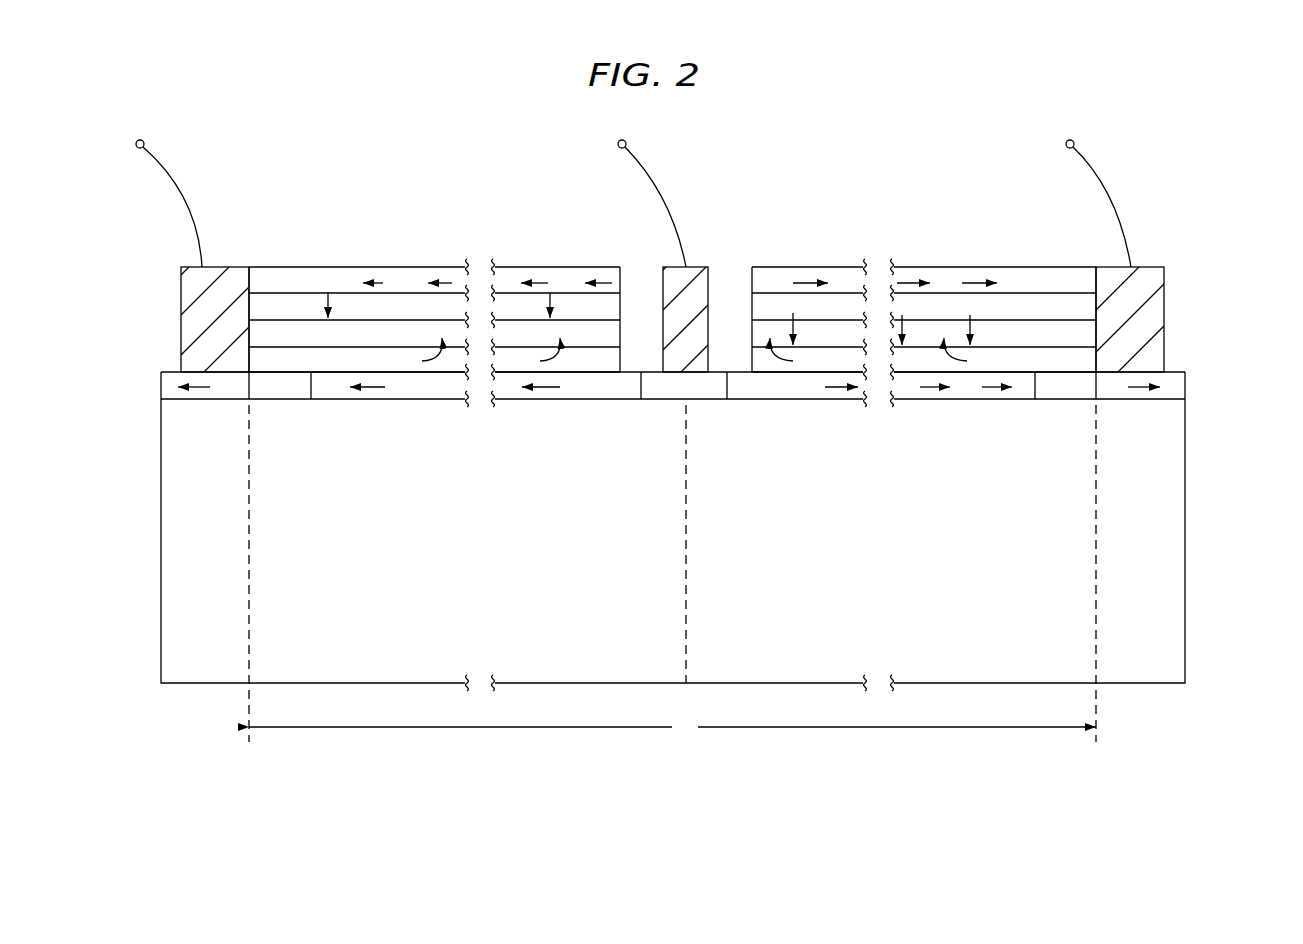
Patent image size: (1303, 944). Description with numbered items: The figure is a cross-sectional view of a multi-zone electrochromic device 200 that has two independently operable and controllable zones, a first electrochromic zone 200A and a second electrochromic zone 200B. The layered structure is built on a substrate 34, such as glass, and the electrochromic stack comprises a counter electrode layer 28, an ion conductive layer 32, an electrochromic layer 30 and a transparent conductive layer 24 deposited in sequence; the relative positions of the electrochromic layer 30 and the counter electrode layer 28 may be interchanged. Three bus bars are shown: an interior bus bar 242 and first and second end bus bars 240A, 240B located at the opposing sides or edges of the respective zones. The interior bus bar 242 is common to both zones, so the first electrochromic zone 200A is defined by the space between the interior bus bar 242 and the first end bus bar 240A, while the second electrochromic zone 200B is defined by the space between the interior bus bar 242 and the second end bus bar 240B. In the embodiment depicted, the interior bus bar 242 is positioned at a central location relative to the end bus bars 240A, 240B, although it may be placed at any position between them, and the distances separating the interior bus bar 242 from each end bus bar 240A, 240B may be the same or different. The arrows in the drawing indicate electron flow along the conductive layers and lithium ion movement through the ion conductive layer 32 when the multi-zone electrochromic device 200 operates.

The transparent conductive layer 24 is at (260, 275).
The counter electrode layer 28 is at (307, 360).
The electrochromic layer 30 is at (277, 303).
The ion conductive layer 32 is at (287, 330).
The substrate 34 is at (183, 567).
The multi-zone electrochromic device 200 is at (1056, 792).
The first electrochromic zone 200A is at (415, 540).
The second electrochromic zone 200B is at (907, 540).
The first end bus bar 240A is at (180, 360).
The second end bus bar 240B is at (1166, 360).
The interior bus bar 242 is at (416, 233).